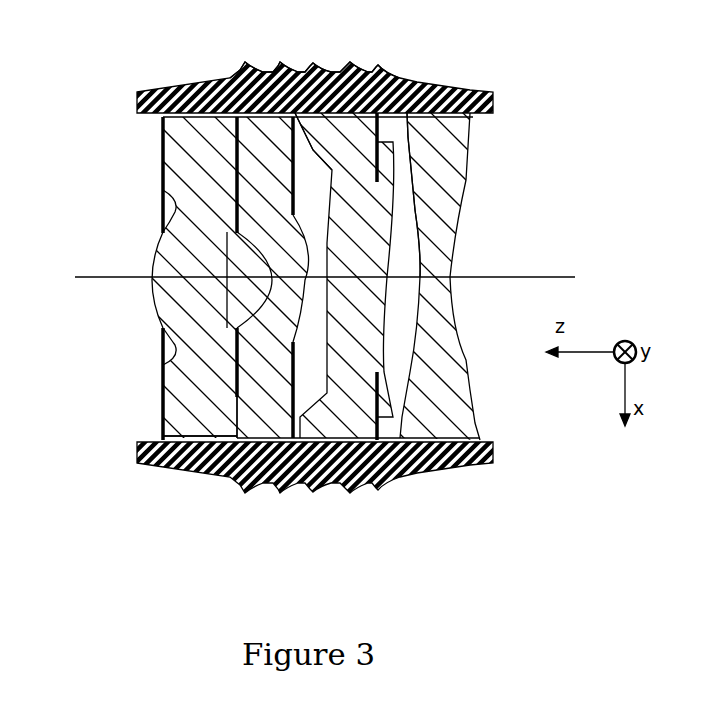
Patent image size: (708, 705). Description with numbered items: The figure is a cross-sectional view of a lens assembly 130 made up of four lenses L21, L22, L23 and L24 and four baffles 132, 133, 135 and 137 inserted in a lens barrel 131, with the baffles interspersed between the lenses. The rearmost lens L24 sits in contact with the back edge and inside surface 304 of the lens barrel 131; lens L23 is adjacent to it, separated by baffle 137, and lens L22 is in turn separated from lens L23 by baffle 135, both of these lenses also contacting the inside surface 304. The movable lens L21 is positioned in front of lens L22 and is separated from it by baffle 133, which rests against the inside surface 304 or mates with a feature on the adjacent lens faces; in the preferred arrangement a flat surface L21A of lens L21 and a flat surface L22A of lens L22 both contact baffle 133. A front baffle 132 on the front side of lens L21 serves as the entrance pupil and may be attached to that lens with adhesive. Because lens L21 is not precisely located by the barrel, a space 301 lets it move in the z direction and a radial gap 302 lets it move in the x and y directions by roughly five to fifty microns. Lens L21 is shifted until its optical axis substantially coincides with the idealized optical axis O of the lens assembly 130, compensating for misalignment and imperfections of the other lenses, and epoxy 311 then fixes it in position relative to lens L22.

The lens assembly 130 is at (582, 88).
The space 301 is at (147, 127).
The radial gap 302 is at (175, 87).
The epoxy 311 is at (233, 125).
The lens barrel 131 is at (272, 72).
The baffle 135 is at (300, 113).
The inside surface 304 is at (378, 113).
The baffle 137 is at (407, 115).
The front baffle 132 is at (163, 333).
The baffle 133 is at (237, 367).
The movable lens L21 is at (158, 441).
The lens L22 is at (262, 425).
The lens L23 is at (338, 425).
The lens L24 is at (412, 432).
The flat surface L21A is at (233, 388).
The flat surface L22A is at (222, 398).
The optical axis O is at (528, 277).